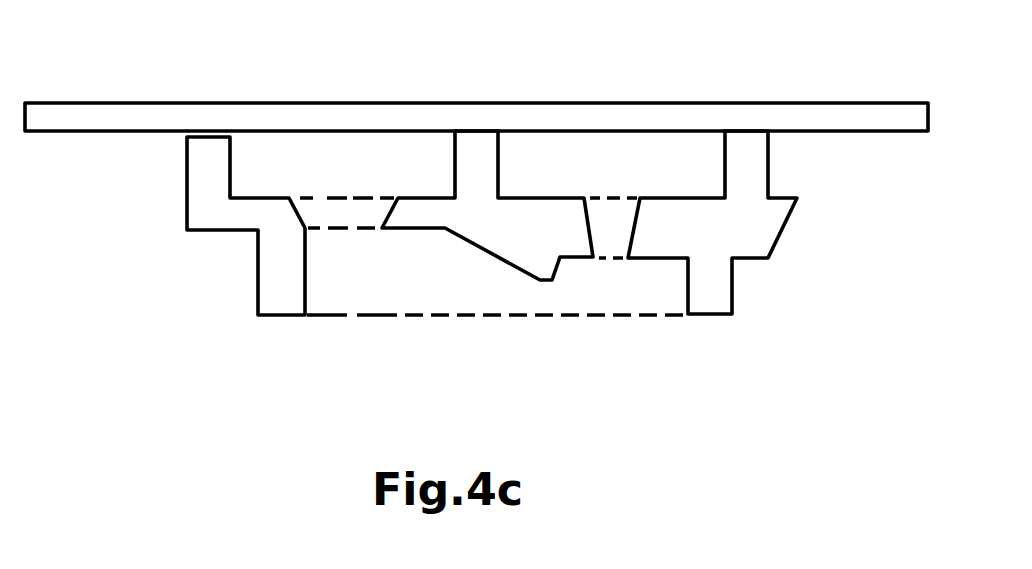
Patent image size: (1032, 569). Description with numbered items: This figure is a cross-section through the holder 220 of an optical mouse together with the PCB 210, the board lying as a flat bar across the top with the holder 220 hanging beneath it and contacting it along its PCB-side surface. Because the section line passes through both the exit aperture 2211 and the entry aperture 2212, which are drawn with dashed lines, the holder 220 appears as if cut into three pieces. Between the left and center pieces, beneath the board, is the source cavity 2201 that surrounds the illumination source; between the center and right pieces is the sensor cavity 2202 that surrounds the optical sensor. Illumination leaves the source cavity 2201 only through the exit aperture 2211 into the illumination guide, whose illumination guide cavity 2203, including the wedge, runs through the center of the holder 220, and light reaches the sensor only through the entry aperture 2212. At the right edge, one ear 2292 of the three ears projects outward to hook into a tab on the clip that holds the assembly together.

The PCB 210 is at (476, 116).
The holder 220 is at (492, 223).
The source cavity 2201 is at (270, 162).
The sensor cavity 2202 is at (701, 157).
The illumination guide cavity 2203 is at (323, 282).
The exit aperture 2211 is at (353, 213).
The entry aperture 2212 is at (608, 240).
The ear 2292 is at (795, 233).